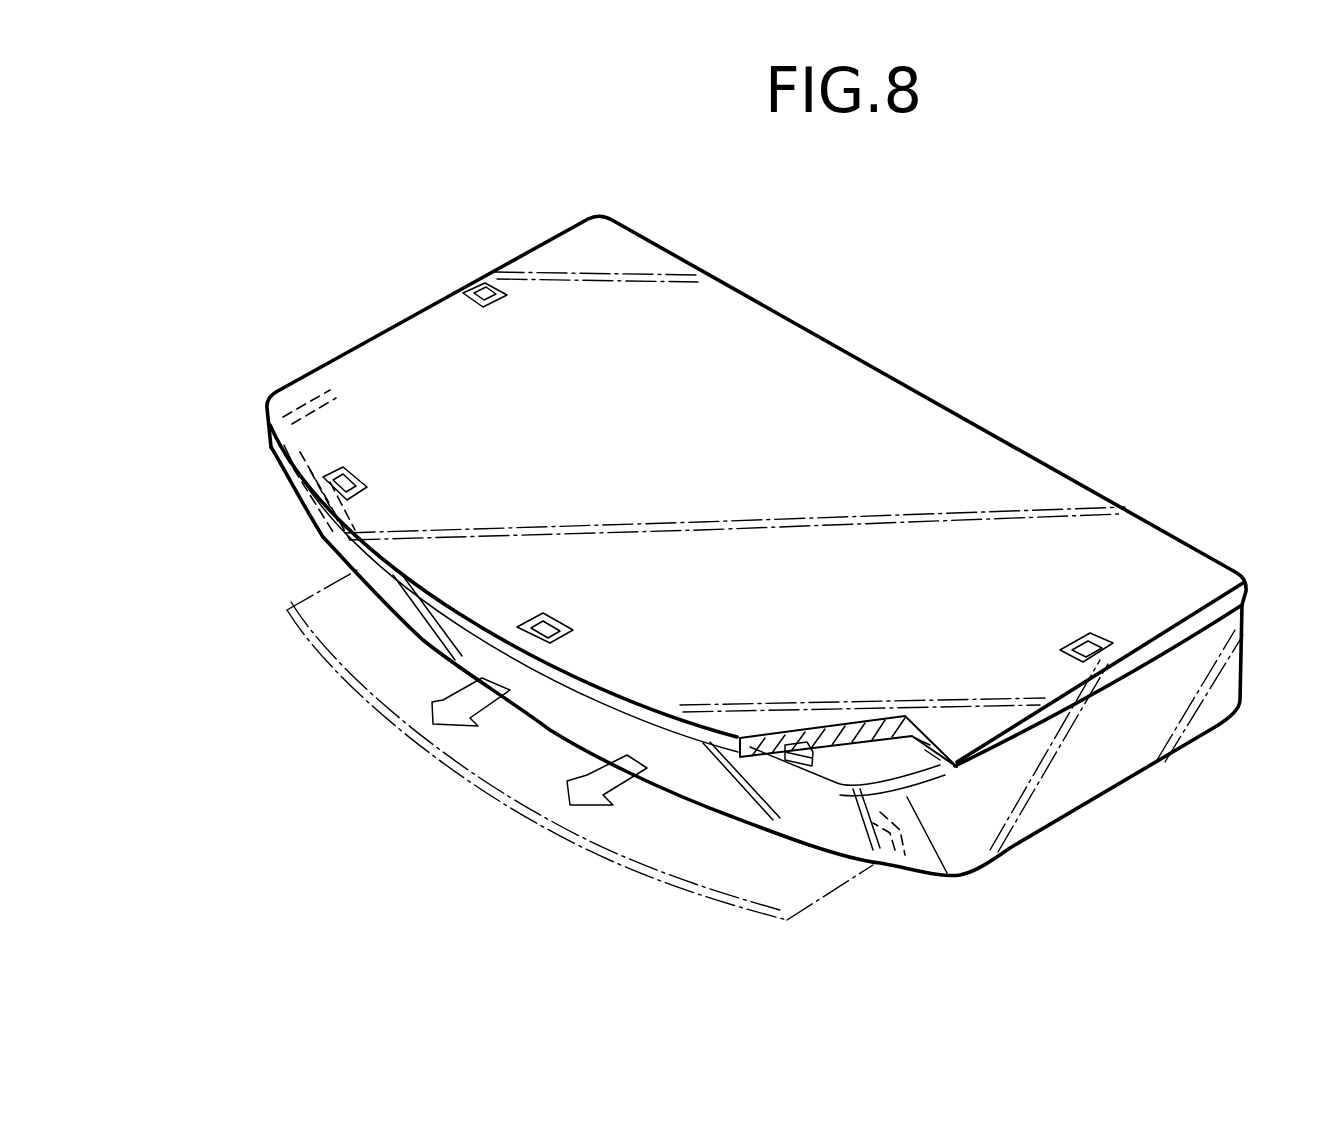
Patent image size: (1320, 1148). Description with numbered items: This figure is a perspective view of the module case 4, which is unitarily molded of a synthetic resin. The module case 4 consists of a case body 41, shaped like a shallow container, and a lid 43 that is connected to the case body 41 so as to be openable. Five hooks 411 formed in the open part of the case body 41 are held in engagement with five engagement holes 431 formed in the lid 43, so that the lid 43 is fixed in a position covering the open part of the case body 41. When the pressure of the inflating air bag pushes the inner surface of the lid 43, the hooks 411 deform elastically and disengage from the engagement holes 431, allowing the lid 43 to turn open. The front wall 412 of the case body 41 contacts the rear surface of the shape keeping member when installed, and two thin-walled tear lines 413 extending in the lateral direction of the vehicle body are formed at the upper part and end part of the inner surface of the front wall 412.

The module case 4 is at (958, 365).
The case body 41 is at (1077, 768).
The hook 411 is at (1105, 640).
The front wall 412 is at (683, 777).
The tear line 413 is at (897, 900).
The lid 43 is at (730, 375).
The engagement hole 431 is at (485, 305).